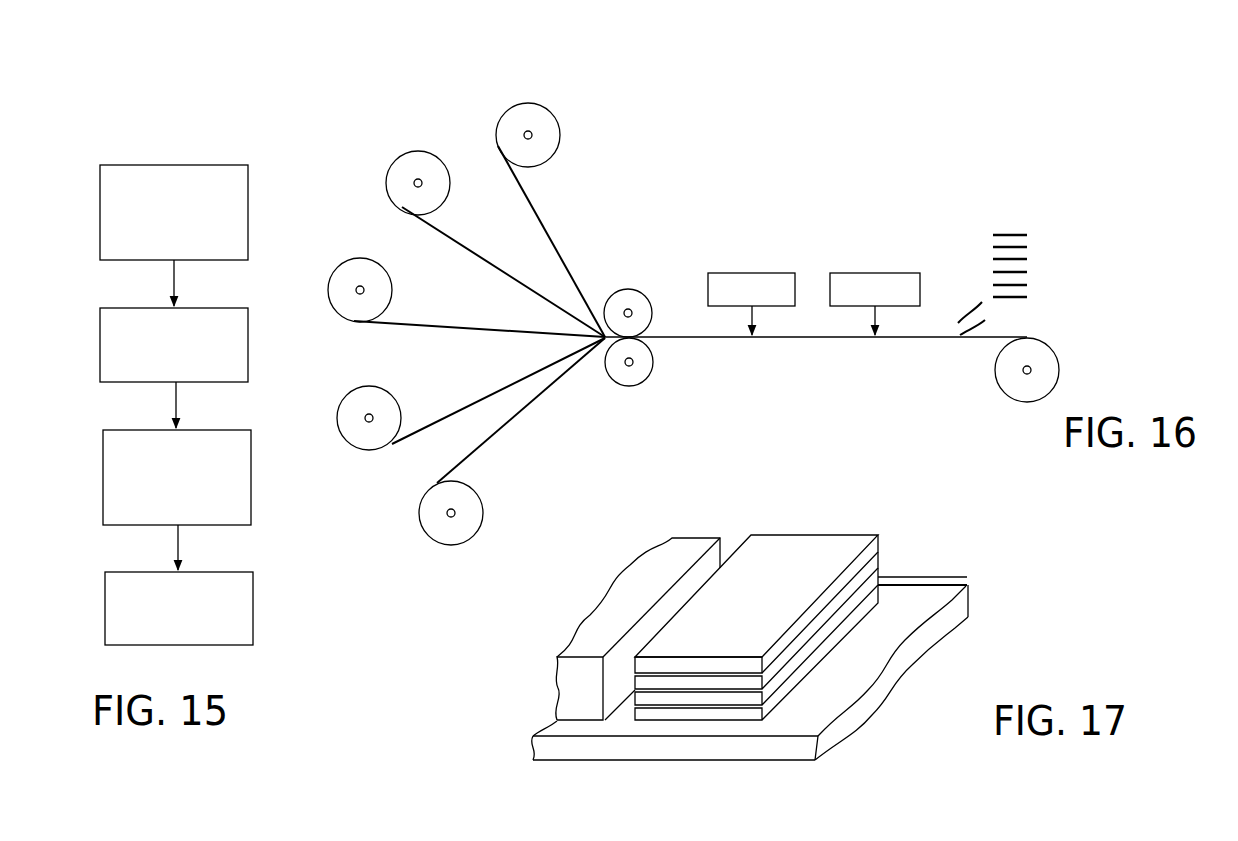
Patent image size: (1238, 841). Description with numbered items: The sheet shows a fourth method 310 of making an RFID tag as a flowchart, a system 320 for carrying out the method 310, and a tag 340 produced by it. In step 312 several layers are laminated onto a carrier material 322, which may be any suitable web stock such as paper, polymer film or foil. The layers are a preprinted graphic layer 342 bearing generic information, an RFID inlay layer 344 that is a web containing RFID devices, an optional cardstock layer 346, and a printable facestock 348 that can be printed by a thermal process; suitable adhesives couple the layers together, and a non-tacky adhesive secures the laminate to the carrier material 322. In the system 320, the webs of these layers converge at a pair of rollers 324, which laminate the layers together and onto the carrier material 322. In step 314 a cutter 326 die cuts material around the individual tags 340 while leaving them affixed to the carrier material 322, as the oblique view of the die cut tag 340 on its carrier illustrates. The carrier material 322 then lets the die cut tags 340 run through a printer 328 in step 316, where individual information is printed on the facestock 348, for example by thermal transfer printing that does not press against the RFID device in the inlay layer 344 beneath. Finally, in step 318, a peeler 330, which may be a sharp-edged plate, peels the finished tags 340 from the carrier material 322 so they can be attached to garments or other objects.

In FIG. 15, the fourth method 310 is at (110, 147).
In FIG. 15, the laminating step 312 is at (100, 206).
In FIG. 15, the die cutting step 314 is at (100, 337).
In FIG. 15, the printing step 316 is at (103, 443).
In FIG. 15, the peeling step 318 is at (105, 597).
In FIG. 16, the system 320 is at (460, 100).
In FIG. 16, the carrier material 322 is at (512, 422).
In FIG. 17, the carrier material 322 is at (820, 747).
In FIG. 16, the pair of rollers 324 is at (612, 282).
In FIG. 16, the cutter 326 is at (749, 273).
In FIG. 16, the printer 328 is at (868, 273).
In FIG. 16, the peeler 330 is at (975, 330).
In FIG. 16, the tag 340 is at (985, 250).
In FIG. 17, the tag 340 is at (697, 510).
In FIG. 16, the preprinted graphic layer 342 is at (483, 399).
In FIG. 17, the preprinted graphic layer 342 is at (880, 594).
In FIG. 16, the RFID inlay layer 344 is at (415, 325).
In FIG. 17, the RFID inlay layer 344 is at (968, 578).
In FIG. 16, the cardstock layer 346 is at (462, 244).
In FIG. 17, the cardstock layer 346 is at (880, 562).
In FIG. 16, the printable facestock 348 is at (527, 197).
In FIG. 17, the printable facestock 348 is at (880, 547).